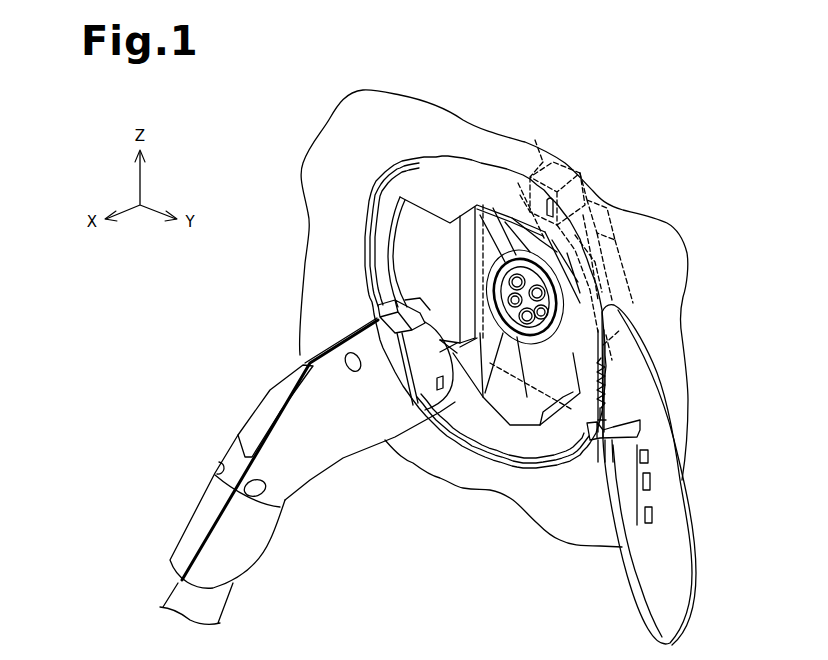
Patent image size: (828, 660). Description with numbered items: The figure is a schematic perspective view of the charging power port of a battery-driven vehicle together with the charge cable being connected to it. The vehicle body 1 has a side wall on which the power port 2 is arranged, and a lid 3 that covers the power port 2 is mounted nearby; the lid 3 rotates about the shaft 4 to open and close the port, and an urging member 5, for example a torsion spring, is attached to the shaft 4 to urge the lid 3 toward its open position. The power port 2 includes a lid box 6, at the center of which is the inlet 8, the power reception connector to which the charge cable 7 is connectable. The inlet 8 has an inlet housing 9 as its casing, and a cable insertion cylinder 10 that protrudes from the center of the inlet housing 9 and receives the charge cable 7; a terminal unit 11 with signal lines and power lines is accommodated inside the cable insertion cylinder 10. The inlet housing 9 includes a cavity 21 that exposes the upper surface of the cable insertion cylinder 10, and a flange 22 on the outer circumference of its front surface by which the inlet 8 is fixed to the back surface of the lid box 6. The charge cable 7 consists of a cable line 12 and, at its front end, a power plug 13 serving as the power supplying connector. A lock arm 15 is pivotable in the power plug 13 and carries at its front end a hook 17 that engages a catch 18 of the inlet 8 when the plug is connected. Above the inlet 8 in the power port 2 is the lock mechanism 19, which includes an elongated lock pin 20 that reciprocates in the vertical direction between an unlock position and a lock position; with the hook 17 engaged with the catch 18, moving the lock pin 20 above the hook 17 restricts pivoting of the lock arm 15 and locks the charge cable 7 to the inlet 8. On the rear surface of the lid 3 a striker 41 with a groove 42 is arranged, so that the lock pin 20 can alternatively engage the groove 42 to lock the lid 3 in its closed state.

The body 1 is at (530, 500).
The power port 2 is at (404, 180).
The lid 3 is at (681, 534).
The shaft 4 is at (612, 365).
The urging member 5 is at (612, 392).
The lid box 6 is at (548, 462).
The charge cable 7 is at (205, 508).
The inlet 8 is at (492, 251).
The inlet housing 9 is at (627, 270).
The cable insertion cylinder 10 is at (521, 378).
The terminal unit 11 is at (503, 292).
The cable line 12 is at (182, 586).
The power plug 13 is at (342, 460).
The lock arm 15 is at (378, 311).
The hook 17 is at (428, 312).
The catch 18 is at (492, 232).
The lock mechanism 19 is at (536, 137).
The lock pin 20 is at (590, 180).
The cavity 21 is at (520, 198).
The flange 22 is at (617, 243).
The striker 41 is at (596, 450).
The groove 42 is at (608, 418).